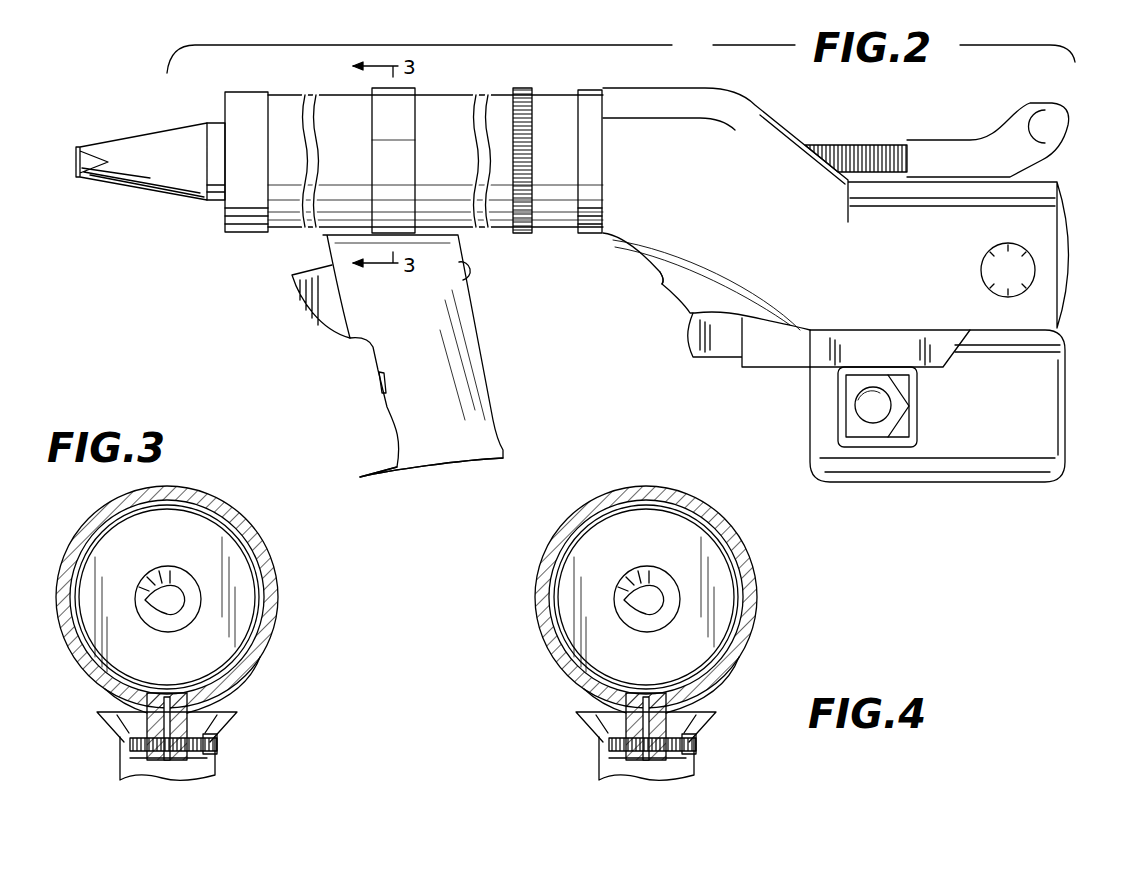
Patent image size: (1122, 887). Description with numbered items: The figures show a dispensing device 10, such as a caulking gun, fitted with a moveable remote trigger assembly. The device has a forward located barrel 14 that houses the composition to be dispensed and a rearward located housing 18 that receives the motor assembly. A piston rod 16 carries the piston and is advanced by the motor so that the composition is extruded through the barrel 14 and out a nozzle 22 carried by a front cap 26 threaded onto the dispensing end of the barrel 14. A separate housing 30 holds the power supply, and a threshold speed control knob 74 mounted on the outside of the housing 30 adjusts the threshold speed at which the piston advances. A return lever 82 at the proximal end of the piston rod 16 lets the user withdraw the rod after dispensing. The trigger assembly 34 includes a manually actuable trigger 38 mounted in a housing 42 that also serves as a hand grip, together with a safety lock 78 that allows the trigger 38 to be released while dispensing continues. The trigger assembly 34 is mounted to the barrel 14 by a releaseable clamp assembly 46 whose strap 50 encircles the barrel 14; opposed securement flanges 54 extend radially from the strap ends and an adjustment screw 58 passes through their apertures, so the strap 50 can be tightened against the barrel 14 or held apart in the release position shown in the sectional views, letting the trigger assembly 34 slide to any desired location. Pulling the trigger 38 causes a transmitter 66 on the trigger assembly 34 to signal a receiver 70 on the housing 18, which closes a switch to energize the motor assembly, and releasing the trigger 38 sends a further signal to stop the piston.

In FIG. 2, the dispensing device 10 is at (656, 83).
In FIG. 2, the barrel 14 is at (458, 95).
In FIG. 2, the piston rod 16 is at (852, 145).
In FIG. 2, the housing 18 is at (713, 163).
In FIG. 2, the nozzle 22 is at (137, 147).
In FIG. 3, the nozzle 22 is at (223, 572).
In FIG. 4, the nozzle 22 is at (704, 579).
In FIG. 2, the front cap 26 is at (247, 93).
In FIG. 3, the front cap 26 is at (167, 571).
In FIG. 4, the front cap 26 is at (648, 576).
In FIG. 2, the housing 30 is at (1060, 405).
In FIG. 2, the trigger assembly 34 is at (486, 345).
In FIG. 2, the trigger 38 is at (318, 312).
In FIG. 2, the housing 42 is at (455, 455).
In FIG. 3, the housing 42 is at (197, 708).
In FIG. 4, the housing 42 is at (673, 708).
In FIG. 2, the clamp assembly 46 is at (364, 108).
In FIG. 3, the clamp assembly 46 is at (208, 597).
In FIG. 4, the clamp assembly 46 is at (686, 597).
In FIG. 2, the strap 50 is at (398, 145).
In FIG. 3, the strap 50 is at (205, 597).
In FIG. 4, the strap 50 is at (681, 597).
In FIG. 3, the securement flanges 54 is at (173, 734).
In FIG. 4, the securement flanges 54 is at (651, 735).
In FIG. 3, the adjustment screw 58 is at (202, 757).
In FIG. 4, the adjustment screw 58 is at (681, 758).
In FIG. 2, the transmitter 66 is at (465, 272).
In FIG. 2, the receiver 70 is at (658, 283).
In FIG. 2, the threshold speed control knob 74 is at (1020, 268).
In FIG. 2, the safety lock 78 is at (375, 392).
In FIG. 2, the return lever 82 is at (1045, 118).